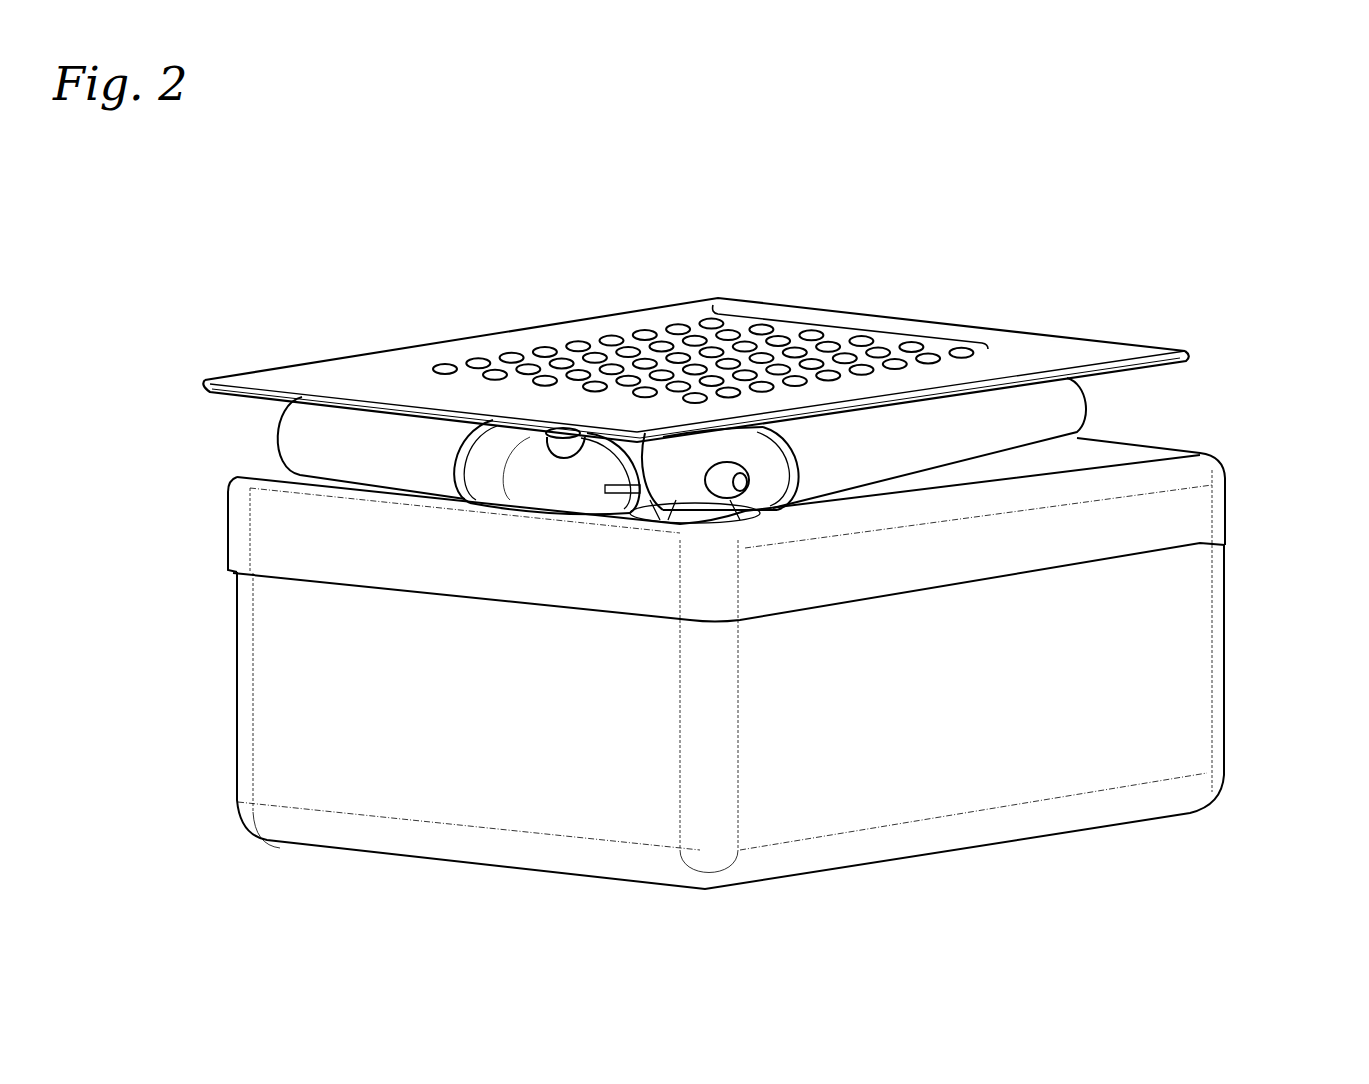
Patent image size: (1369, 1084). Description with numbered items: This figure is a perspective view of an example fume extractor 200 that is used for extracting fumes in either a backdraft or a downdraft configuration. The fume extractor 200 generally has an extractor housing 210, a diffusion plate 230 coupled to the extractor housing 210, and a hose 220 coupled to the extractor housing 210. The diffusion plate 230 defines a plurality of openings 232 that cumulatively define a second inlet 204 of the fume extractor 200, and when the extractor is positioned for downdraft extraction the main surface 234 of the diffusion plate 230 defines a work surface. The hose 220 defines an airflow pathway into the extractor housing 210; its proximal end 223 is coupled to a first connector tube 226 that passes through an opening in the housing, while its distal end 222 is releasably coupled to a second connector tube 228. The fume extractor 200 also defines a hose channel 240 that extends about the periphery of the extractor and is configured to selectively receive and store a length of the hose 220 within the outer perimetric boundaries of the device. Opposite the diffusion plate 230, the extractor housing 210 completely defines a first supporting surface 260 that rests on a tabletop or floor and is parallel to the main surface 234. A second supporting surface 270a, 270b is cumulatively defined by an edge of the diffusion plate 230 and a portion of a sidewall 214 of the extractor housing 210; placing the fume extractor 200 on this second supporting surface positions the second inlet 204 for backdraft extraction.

The fume extractor 200 is at (458, 258).
The second inlet 204 is at (640, 318).
The extractor housing 210 is at (734, 691).
The sidewall 214 is at (1175, 520).
The hose 220 is at (1075, 418).
The distal end 222 is at (448, 467).
The proximal end 223 is at (803, 482).
The first connector tube 226 is at (760, 492).
The second connector tube 228 is at (488, 487).
The diffusion plate 230 is at (1145, 325).
The openings 232 is at (833, 312).
The main surface 234 is at (1033, 347).
The hose channel 240 is at (698, 575).
The first supporting surface 260 is at (583, 878).
The second supporting surface 270a is at (253, 367).
The second supporting surface 270b is at (237, 773).